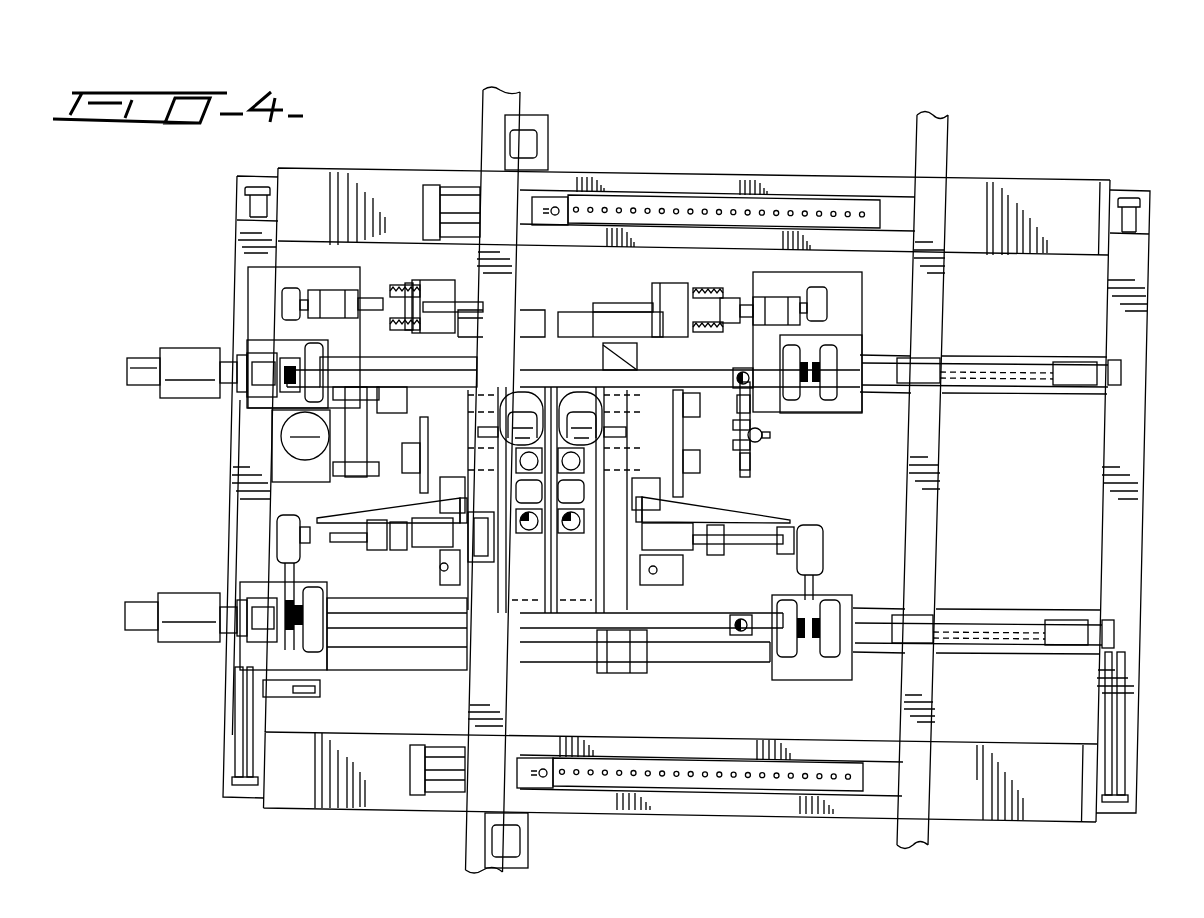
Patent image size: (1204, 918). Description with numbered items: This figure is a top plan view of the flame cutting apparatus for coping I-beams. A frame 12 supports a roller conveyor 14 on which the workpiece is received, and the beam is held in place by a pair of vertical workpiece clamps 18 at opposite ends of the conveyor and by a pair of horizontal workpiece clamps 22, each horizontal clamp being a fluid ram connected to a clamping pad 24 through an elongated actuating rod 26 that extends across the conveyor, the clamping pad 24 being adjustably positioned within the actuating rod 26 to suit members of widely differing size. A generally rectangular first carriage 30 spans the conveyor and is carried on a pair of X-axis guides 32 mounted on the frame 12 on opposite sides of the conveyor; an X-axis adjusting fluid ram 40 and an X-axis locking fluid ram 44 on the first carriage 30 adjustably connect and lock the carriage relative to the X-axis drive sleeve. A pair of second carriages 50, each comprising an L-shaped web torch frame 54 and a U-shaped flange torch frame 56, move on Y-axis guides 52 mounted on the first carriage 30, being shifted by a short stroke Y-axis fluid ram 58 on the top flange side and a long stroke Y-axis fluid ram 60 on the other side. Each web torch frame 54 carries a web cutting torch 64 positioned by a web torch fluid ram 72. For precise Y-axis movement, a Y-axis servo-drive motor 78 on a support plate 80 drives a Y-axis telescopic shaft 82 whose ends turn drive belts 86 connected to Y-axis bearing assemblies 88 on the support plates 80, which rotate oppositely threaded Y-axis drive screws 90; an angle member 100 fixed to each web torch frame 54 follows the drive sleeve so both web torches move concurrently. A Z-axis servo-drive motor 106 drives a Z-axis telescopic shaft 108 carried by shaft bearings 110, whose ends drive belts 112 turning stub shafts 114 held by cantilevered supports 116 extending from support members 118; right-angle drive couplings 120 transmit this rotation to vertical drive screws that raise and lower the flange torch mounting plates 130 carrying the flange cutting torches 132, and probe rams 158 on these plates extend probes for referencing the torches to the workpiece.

The frame 12 is at (1148, 698).
The roller conveyor 14 is at (940, 705).
The vertical workpiece clamp 18 is at (548, 121).
The horizontal workpiece clamp 22 is at (455, 172).
The clamping pad 24 is at (556, 202).
The actuating rod 26 is at (651, 208).
The first carriage 30 is at (1155, 423).
The X-axis guide 32 is at (247, 716).
The X-axis adjusting fluid ram 40 is at (301, 446).
The X-axis locking fluid ram 44 is at (353, 428).
The second carriage 50 is at (527, 650).
The Y-axis guide 52 is at (958, 373).
The web torch frame 54 is at (527, 318).
The flange torch frame 56 is at (390, 610).
The short stroke Y-axis fluid ram 58 is at (406, 394).
The long stroke Y-axis fluid ram 60 is at (392, 655).
The web cutting torch 64 is at (526, 393).
The web torch fluid ram 72 is at (527, 492).
The Y-axis servo-drive motor 78 is at (190, 355).
The support plate 80 is at (280, 294).
The Y-axis telescopic shaft 82 is at (677, 387).
The drive belt 86 is at (293, 338).
The Y-axis bearing assembly 88 is at (345, 296).
The Y-axis drive screw 90 is at (467, 302).
The angle member 100 is at (420, 283).
The Z-axis servo-drive motor 106 is at (188, 593).
The Z-axis telescopic shaft 108 is at (677, 625).
The shaft bearing 110 is at (317, 633).
The drive belt 112 is at (293, 558).
The stub shaft 114 is at (335, 535).
The cantilevered support 116 is at (353, 507).
The support member 118 is at (527, 532).
The right-angle drive coupling 120 is at (445, 544).
The flange torch mounting plate 130 is at (413, 463).
The flange cutting torch 132 is at (393, 428).
The probe ram 158 is at (752, 413).